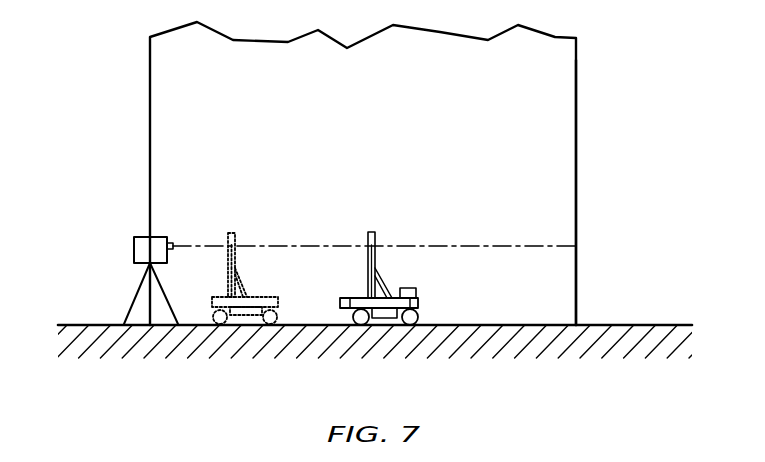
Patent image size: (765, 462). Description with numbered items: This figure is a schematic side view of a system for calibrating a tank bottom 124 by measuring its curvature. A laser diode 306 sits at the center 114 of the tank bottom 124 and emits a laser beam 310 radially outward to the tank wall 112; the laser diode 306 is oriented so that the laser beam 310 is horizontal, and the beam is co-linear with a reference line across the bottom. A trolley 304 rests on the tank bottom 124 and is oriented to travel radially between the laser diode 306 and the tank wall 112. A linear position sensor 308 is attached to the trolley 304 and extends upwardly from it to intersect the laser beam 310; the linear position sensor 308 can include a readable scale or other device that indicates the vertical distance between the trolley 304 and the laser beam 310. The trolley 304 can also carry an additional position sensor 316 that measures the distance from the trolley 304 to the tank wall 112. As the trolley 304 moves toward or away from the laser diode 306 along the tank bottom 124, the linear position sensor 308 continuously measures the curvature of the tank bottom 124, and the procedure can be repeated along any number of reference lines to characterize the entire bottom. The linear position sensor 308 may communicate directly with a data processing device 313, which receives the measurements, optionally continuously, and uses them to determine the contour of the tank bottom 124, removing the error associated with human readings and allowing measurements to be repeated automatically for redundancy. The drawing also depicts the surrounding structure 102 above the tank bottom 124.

The structure 102 is at (552, 84).
The tank wall 112 is at (577, 176).
The center 114 is at (150, 117).
The laser diode 306 is at (145, 236).
The linear position sensor 308 is at (370, 232).
The trolley 304 is at (388, 257).
The additional position sensor 316 is at (348, 298).
The data processing device 313 is at (417, 293).
The laser beam 310 is at (490, 247).
The tank bottom 124 is at (515, 325).